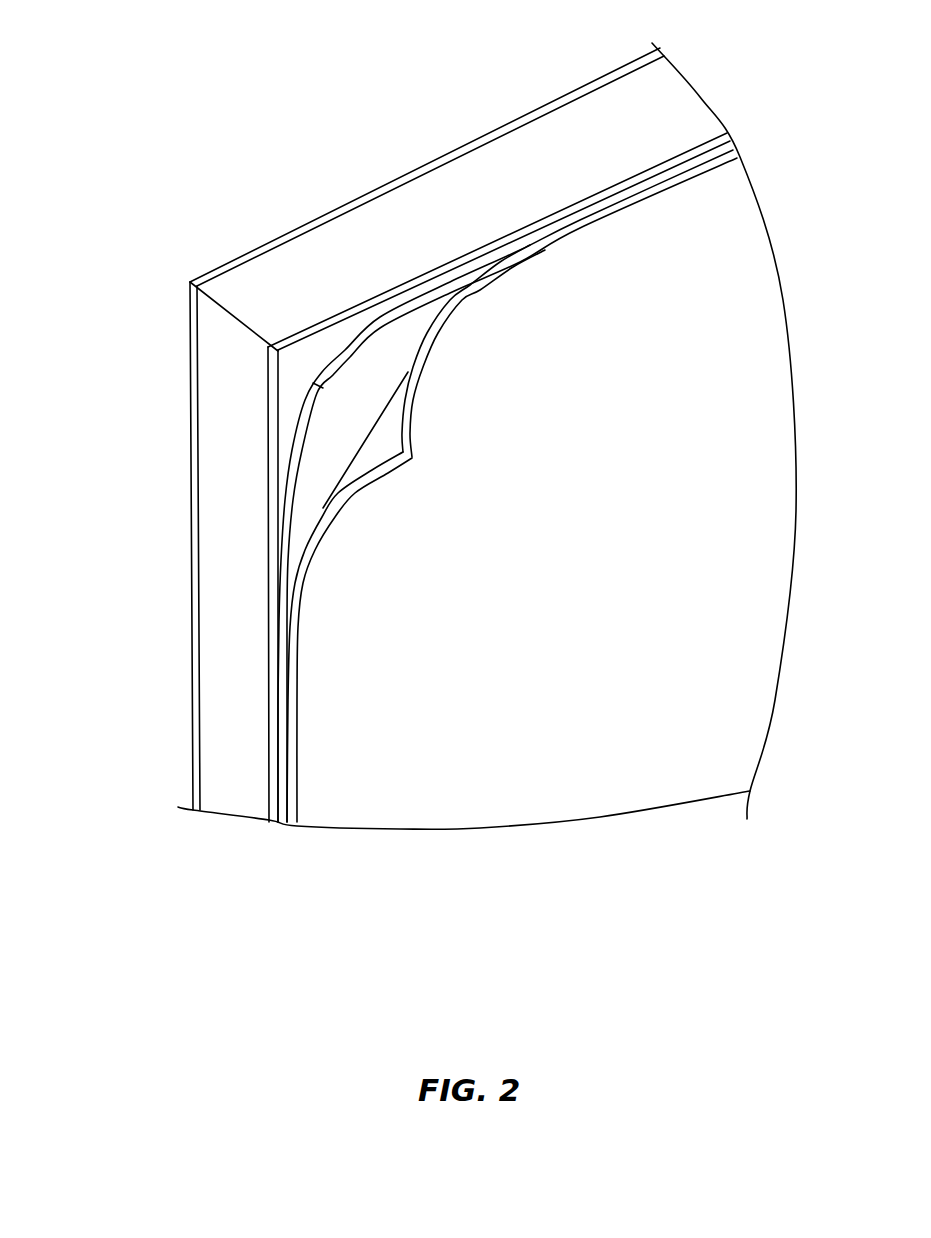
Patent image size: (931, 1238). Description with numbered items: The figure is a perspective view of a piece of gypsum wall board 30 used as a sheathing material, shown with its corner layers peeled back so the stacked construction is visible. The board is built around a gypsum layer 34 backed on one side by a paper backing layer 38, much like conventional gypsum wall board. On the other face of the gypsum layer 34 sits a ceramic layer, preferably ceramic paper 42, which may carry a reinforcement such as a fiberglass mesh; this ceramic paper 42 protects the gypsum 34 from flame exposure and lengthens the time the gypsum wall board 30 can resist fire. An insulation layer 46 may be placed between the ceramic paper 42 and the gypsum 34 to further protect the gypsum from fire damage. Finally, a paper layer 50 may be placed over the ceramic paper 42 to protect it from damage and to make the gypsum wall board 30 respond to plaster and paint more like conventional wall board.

The gypsum wall board 30 is at (619, 560).
The gypsum layer 34 is at (563, 152).
The paper backing layer 38 is at (408, 178).
The ceramic paper 42 is at (332, 365).
The insulation layer 46 is at (300, 360).
The paper layer 50 is at (382, 446).